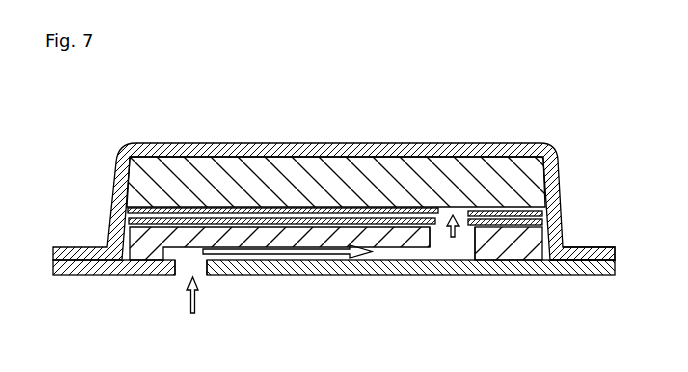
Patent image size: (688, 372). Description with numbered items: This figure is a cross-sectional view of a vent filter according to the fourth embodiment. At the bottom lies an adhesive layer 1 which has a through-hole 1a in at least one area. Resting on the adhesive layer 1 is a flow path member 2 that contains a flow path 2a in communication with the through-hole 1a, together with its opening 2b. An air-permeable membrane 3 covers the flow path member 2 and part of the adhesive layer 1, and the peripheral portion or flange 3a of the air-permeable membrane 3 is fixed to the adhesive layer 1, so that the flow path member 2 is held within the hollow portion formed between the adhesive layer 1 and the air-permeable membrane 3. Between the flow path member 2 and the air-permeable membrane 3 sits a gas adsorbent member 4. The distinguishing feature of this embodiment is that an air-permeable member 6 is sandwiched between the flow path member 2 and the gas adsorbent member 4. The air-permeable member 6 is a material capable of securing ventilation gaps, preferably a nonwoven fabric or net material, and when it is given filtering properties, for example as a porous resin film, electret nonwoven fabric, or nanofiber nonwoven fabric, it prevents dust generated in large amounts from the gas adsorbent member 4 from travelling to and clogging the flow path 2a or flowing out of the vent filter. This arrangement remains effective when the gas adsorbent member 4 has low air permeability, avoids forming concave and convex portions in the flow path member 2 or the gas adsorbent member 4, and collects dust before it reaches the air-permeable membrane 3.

The adhesive layer 1 is at (93, 275).
The through-hole 1a is at (202, 276).
The flow path member 2 is at (142, 245).
The flow path 2a is at (354, 260).
The opening 2b is at (462, 242).
The air-permeable membrane 3 is at (418, 143).
The peripheral portion (flange) 3a is at (603, 247).
The gas adsorbent member 4 is at (172, 177).
The air-permeable member 6 is at (507, 210).